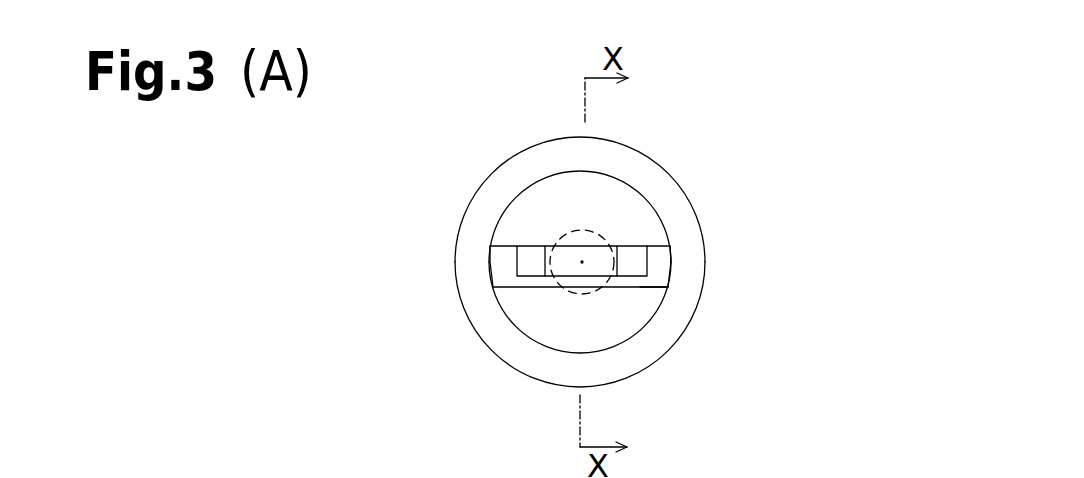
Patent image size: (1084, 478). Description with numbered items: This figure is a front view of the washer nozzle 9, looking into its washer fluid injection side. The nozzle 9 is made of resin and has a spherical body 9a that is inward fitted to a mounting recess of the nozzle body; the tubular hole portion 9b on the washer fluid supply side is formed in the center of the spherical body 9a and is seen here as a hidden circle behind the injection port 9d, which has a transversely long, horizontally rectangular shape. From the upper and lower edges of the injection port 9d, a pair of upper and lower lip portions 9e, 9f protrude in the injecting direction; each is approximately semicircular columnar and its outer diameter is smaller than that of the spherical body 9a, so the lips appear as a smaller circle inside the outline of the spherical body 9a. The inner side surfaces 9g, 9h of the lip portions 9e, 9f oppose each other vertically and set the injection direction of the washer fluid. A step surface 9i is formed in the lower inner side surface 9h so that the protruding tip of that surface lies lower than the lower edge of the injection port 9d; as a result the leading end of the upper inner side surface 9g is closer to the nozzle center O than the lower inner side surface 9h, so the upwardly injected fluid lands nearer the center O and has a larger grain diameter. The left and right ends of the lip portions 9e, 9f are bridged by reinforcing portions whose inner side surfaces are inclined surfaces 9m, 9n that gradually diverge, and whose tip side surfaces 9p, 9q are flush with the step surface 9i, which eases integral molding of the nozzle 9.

The nozzle 9 is at (693, 147).
The spherical body 9a is at (560, 146).
The tubular hole portion 9b is at (600, 238).
The injection port 9d is at (553, 287).
The upper lip portion 9e is at (588, 197).
The lower lip portion 9f is at (597, 328).
The upper lip portion inner side surface 9g is at (558, 246).
The lower lip portion inner side surface 9h is at (565, 288).
The step surface 9i is at (628, 283).
The inclined surface 9m is at (530, 258).
The inclined surface 9n is at (632, 260).
The tip side surface 9p is at (500, 267).
The tip side surface 9q is at (662, 265).
The nozzle center O is at (583, 264).